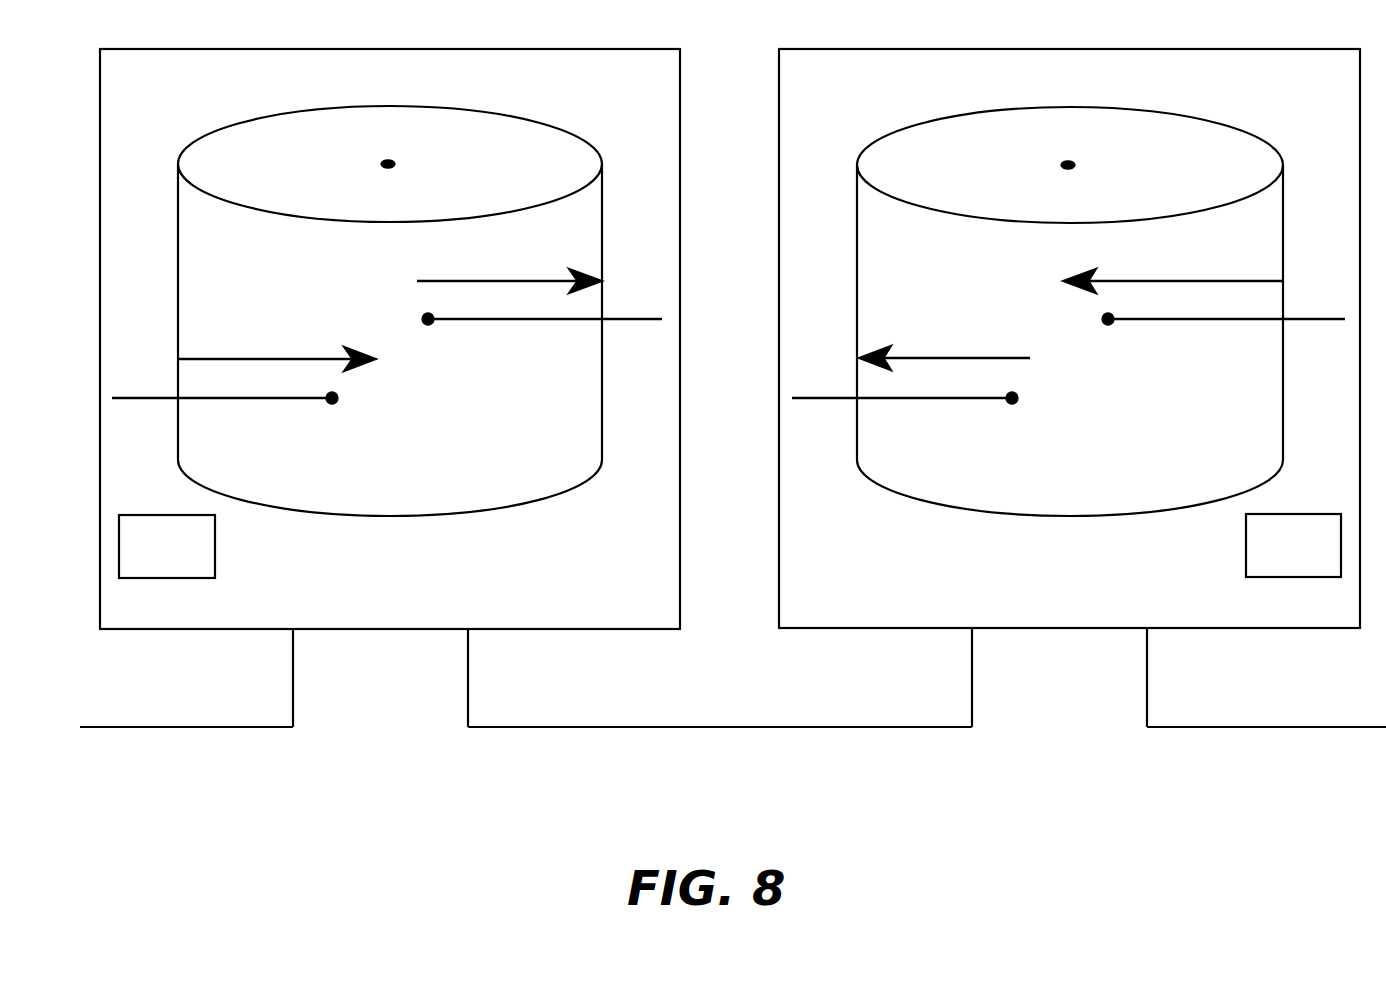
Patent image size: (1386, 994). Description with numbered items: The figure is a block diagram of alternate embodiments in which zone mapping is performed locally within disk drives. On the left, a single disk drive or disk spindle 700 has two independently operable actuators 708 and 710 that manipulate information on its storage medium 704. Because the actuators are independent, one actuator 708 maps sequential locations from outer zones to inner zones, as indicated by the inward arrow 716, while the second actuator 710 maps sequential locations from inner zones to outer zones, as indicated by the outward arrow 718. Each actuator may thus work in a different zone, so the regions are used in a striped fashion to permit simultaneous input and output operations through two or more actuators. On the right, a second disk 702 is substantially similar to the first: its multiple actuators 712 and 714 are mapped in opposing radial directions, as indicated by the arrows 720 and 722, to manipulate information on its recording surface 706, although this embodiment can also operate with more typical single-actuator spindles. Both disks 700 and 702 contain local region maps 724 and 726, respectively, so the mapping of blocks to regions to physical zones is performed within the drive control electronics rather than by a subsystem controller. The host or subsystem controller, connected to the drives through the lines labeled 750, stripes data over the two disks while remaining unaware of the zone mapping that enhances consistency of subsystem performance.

The disk drive 700 is at (600, 630).
The disk 702 is at (1278, 629).
The storage medium 704 is at (253, 118).
The recording surface 706 is at (932, 118).
The actuator 708 is at (195, 400).
The actuator 710 is at (563, 321).
The actuator 712 is at (875, 400).
The actuator 714 is at (1243, 320).
The inward arrow 716 is at (200, 358).
The outward arrow 718 is at (540, 279).
The arrow 720 is at (963, 357).
The arrow 722 is at (1217, 280).
The local region map 724 is at (192, 578).
The local region map 726 is at (1275, 577).
The network connection 750 is at (293, 727).